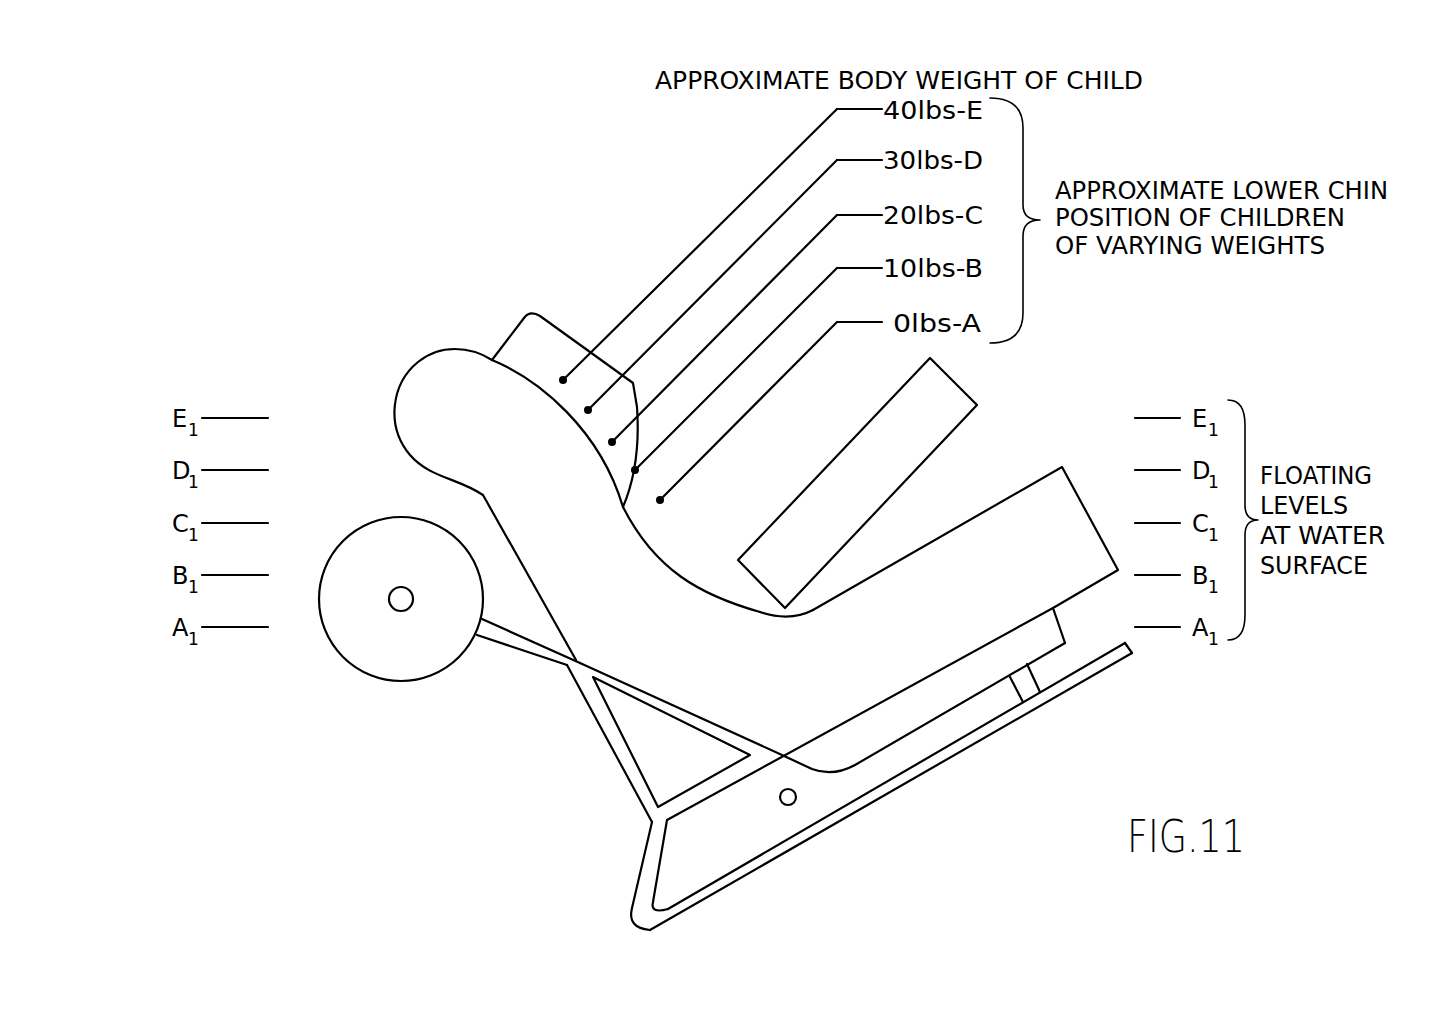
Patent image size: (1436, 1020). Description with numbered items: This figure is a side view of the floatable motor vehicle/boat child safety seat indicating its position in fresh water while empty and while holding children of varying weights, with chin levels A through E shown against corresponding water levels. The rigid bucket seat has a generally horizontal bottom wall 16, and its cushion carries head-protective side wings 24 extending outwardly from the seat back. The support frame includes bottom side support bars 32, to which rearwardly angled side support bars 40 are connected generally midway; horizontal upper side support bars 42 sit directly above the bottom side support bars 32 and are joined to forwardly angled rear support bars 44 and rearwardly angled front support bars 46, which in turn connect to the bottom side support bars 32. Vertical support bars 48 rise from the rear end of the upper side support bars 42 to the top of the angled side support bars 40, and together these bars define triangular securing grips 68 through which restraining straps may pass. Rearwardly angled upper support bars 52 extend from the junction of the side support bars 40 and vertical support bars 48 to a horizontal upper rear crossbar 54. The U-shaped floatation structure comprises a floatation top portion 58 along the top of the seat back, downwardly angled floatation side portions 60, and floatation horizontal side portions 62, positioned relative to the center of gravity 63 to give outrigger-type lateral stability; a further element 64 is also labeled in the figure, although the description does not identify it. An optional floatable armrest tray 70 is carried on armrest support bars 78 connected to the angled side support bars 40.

The bucket seat bottom wall 16 is at (957, 688).
The head-protective side wings 24 is at (557, 335).
The bottom side support bars 32 is at (930, 768).
The rearwardly angled side support bars 40 is at (648, 692).
The upper support side bars 42 is at (705, 795).
The forwardly angled rear support bars 44 is at (647, 875).
The rearwardly angled front support bars 46 is at (1030, 688).
The vertical support bars 48 is at (612, 732).
The rearwardly angled upper support bars 52 is at (533, 652).
The horizontal upper rear crossbar 54 is at (402, 612).
The floatation top portion 58 is at (432, 368).
The downwardly angled floatation side portions 60 is at (687, 573).
The floatation horizontal side portions 62 is at (1025, 510).
The center of gravity 63 is at (792, 806).
The float wheel 64 is at (382, 538).
The triangular securing grips 68 is at (671, 742).
The floatable armrest tray 70 is at (950, 390).
The armrest support bars 78 is at (748, 600).